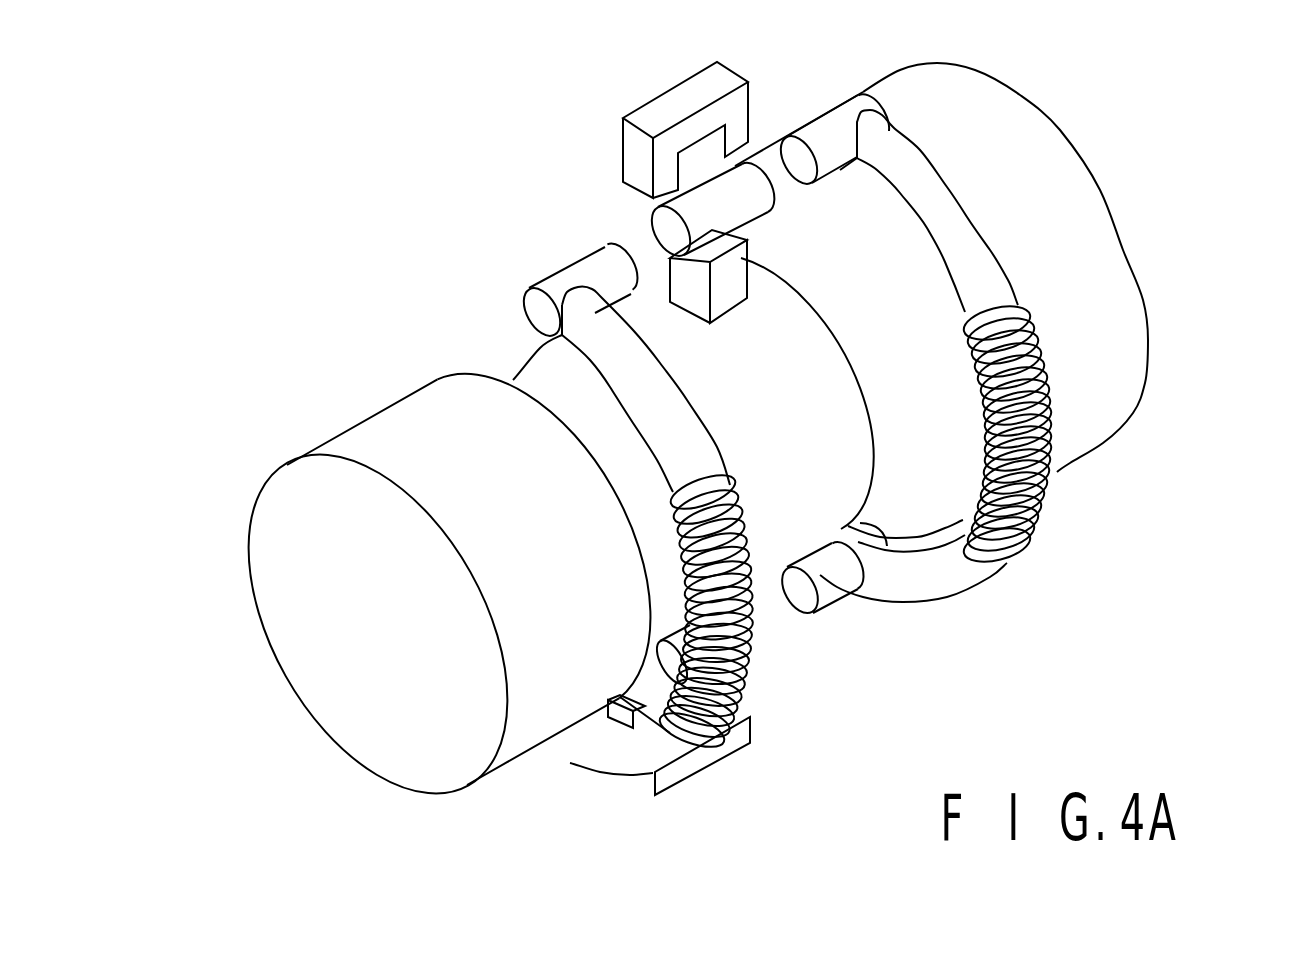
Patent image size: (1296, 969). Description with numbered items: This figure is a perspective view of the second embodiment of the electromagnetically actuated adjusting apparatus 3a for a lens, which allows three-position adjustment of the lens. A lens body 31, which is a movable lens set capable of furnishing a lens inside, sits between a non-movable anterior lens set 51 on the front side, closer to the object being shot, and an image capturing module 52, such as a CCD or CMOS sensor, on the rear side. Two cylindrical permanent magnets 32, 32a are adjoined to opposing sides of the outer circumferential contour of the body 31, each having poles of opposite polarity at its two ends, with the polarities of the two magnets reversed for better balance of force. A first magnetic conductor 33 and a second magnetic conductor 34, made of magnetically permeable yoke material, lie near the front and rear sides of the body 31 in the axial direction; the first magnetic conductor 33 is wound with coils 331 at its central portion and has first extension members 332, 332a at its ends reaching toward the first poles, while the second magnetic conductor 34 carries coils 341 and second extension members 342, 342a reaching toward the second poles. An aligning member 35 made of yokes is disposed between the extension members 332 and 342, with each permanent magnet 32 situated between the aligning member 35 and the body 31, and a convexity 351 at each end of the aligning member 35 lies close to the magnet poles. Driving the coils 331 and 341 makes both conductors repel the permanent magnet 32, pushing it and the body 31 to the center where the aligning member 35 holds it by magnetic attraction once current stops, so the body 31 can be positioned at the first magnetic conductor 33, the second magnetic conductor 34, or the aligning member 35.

The electromagnetically actuated adjusting apparatus for lens 3a is at (1174, 184).
The lens body 31 is at (790, 523).
The permanent magnet 32 is at (695, 217).
The permanent magnet 32a is at (693, 770).
The first magnetic conductor 33 is at (613, 360).
The coils 331 is at (727, 697).
The first extension member 332 is at (603, 267).
The first extension member 332a is at (623, 712).
The second magnetic conductor 34 is at (960, 217).
The coils 341 is at (1043, 488).
The second extension member 342 is at (822, 128).
The second extension member 342a is at (810, 603).
The aligning member 35 is at (667, 107).
The convexity 351 is at (662, 178).
The anterior lens set 51 is at (283, 620).
The image capturing module 52 is at (1120, 290).